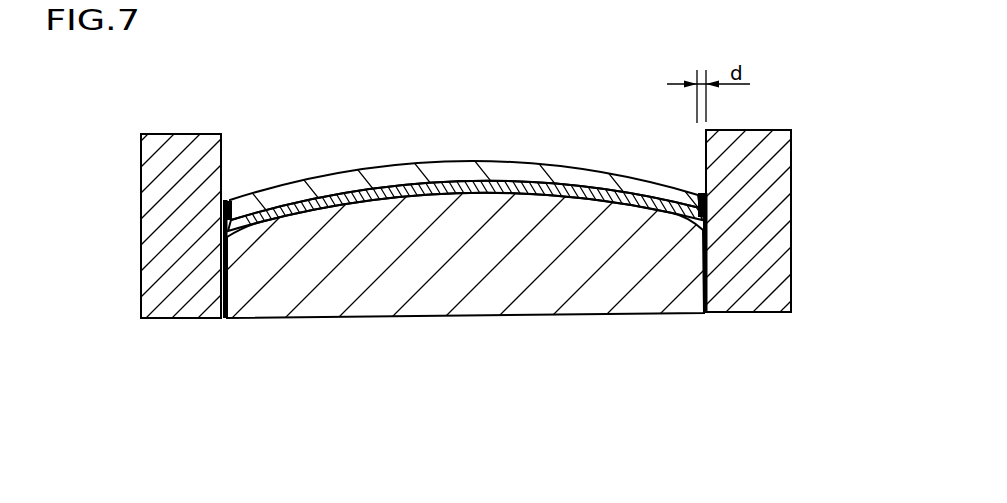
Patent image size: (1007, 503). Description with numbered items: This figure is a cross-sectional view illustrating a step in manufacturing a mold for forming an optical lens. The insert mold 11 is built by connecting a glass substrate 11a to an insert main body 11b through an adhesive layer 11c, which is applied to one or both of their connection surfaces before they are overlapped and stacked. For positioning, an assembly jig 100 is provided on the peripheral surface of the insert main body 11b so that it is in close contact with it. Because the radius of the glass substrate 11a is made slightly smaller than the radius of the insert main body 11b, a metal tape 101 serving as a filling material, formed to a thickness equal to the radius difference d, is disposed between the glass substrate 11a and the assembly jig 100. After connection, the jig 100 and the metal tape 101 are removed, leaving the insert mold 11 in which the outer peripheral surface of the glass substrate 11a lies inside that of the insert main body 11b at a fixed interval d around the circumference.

The insert mold 11 is at (513, 277).
The glass substrate 11a is at (512, 172).
The insert main body 11b is at (423, 245).
The adhesive layer 11c is at (460, 183).
The assembly jig 100 is at (183, 275).
The metal tape 101 is at (223, 212).